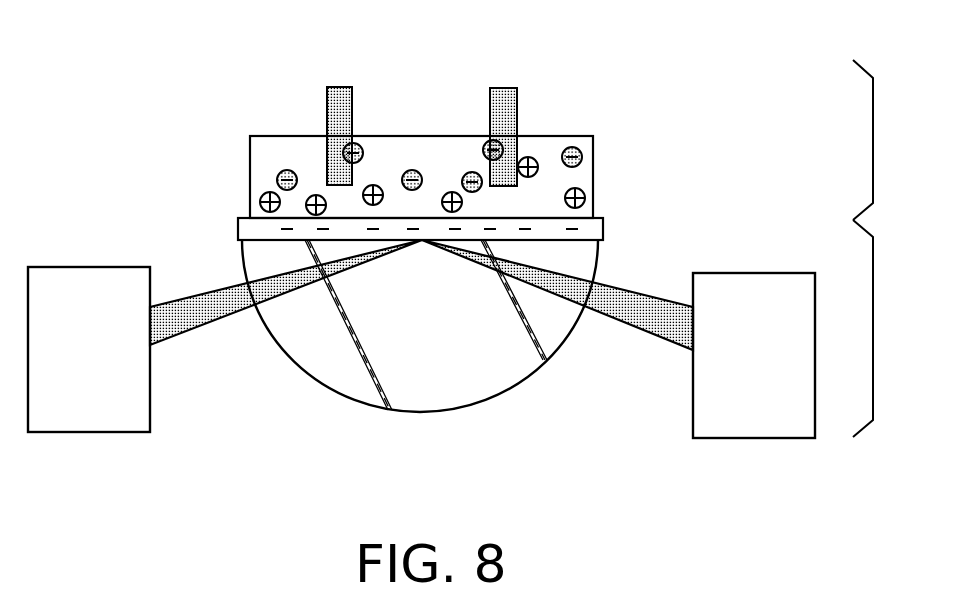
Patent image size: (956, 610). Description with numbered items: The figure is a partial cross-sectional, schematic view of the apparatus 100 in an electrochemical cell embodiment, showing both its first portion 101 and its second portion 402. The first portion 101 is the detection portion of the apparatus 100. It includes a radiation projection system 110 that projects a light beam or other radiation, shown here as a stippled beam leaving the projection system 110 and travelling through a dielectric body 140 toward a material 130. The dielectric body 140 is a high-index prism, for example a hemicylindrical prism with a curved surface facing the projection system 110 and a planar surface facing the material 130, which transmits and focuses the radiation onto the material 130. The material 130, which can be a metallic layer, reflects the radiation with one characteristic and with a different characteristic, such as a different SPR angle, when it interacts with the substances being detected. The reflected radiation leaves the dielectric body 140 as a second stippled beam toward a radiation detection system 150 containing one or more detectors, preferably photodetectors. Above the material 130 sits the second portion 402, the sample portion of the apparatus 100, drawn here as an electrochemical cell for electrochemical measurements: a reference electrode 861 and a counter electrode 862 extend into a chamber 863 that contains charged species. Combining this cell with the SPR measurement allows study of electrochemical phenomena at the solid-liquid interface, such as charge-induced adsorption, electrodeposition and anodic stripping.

The apparatus 100 is at (350, 482).
The first portion 101 is at (893, 328).
The radiation projection system 110 is at (113, 358).
The material 130 is at (603, 232).
The dielectric body 140 is at (487, 402).
The radiation detection system 150 is at (780, 365).
The second portion 402 is at (893, 140).
The reference electrode 861 is at (327, 109).
The counter electrode 862 is at (518, 109).
The chamber 863 is at (594, 168).